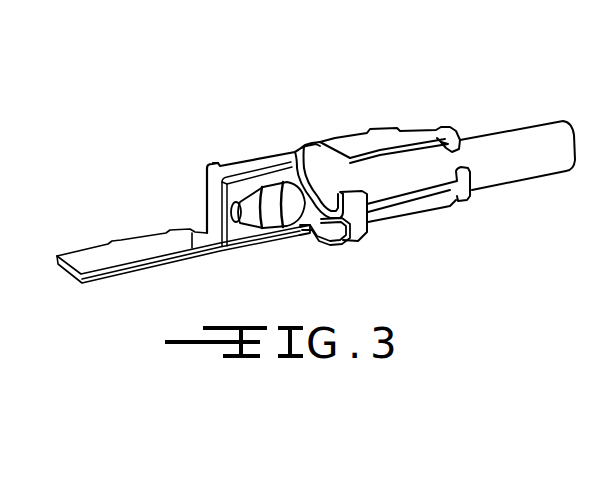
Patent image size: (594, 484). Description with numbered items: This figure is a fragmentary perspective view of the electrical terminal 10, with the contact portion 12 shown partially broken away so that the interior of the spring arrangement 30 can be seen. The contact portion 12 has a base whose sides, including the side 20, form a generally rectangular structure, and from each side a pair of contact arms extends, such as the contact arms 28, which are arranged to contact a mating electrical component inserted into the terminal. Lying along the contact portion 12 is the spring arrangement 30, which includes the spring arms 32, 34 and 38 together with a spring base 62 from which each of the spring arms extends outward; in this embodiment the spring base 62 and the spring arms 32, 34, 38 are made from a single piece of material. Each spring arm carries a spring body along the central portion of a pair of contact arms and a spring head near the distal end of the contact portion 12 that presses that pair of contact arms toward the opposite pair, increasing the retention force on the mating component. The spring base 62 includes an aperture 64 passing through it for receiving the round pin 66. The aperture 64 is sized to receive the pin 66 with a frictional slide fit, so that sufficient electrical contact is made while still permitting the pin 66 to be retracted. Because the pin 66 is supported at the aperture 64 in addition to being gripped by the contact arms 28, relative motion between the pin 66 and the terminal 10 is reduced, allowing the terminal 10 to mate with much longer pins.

The electrical terminal 10 is at (200, 118).
The contact portion 12 is at (238, 154).
The side 20 is at (267, 165).
The spring arm 38 is at (309, 145).
The spring arrangement 30 is at (320, 144).
The contact arms 28 is at (452, 130).
The pin 66 is at (521, 126).
The spring arm 32 is at (360, 238).
The spring arm 34 is at (330, 258).
The spring base 62 is at (302, 244).
The aperture 64 is at (281, 232).